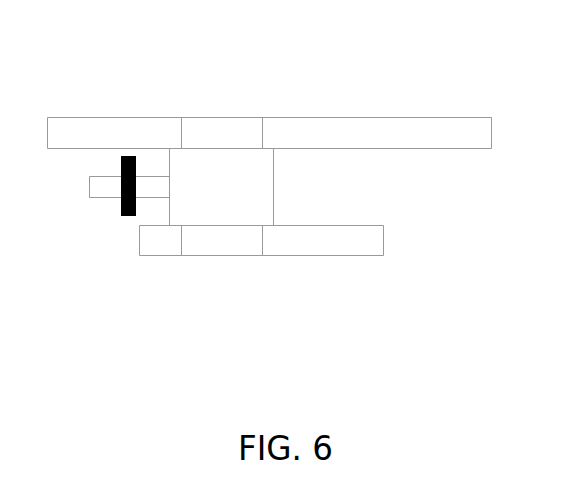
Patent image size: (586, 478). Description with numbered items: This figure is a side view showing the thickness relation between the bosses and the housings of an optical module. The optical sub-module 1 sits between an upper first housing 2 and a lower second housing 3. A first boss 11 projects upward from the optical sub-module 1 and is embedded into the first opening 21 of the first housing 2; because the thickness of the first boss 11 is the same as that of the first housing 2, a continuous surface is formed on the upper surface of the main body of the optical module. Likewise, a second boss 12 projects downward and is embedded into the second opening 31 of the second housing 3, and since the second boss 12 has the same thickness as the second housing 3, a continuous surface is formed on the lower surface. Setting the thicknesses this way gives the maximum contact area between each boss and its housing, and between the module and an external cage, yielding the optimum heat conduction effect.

The optical sub-module 1 is at (246, 194).
The first boss 11 is at (206, 130).
The second boss 12 is at (200, 244).
The first housing 2 is at (352, 134).
The first opening 21 is at (262, 132).
The second housing 3 is at (326, 240).
The second opening 31 is at (262, 242).